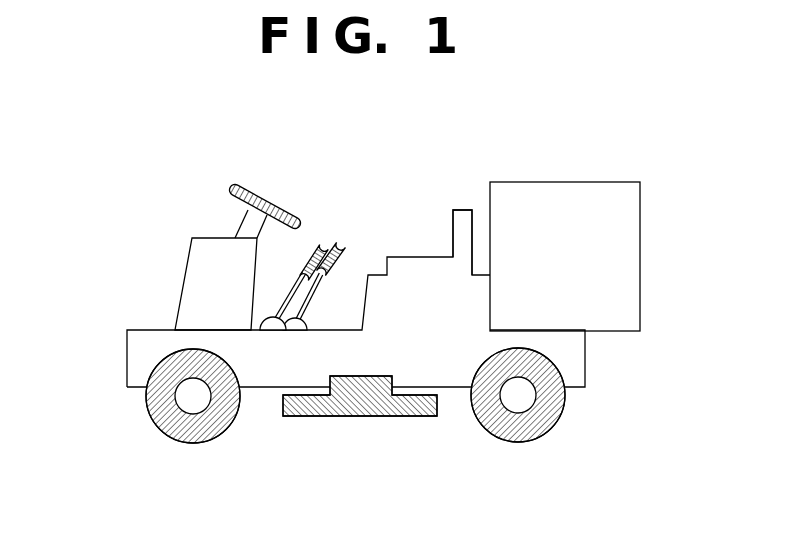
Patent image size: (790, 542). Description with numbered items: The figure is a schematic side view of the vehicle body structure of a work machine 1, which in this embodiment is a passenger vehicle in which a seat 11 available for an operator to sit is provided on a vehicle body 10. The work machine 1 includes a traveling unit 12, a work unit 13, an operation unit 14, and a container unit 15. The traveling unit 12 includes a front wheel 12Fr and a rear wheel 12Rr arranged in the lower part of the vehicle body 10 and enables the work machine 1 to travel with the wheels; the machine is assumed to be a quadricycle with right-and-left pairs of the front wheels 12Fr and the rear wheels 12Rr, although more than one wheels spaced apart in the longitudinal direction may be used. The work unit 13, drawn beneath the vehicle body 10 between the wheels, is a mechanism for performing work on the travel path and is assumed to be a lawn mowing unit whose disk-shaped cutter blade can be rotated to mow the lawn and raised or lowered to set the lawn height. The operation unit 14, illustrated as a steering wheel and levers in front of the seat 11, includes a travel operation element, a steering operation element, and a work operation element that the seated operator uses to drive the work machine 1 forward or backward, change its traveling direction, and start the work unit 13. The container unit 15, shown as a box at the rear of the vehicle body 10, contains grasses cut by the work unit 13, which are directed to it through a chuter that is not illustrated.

The work machine 1 is at (138, 140).
The vehicle body 10 is at (127, 359).
The seat 11 is at (460, 210).
The traveling unit 12 is at (104, 444).
The front wheel 12Fr is at (178, 442).
The rear wheel 12Rr is at (518, 443).
The work unit 13 is at (358, 417).
The operation unit 14 is at (322, 188).
The container unit 15 is at (640, 248).